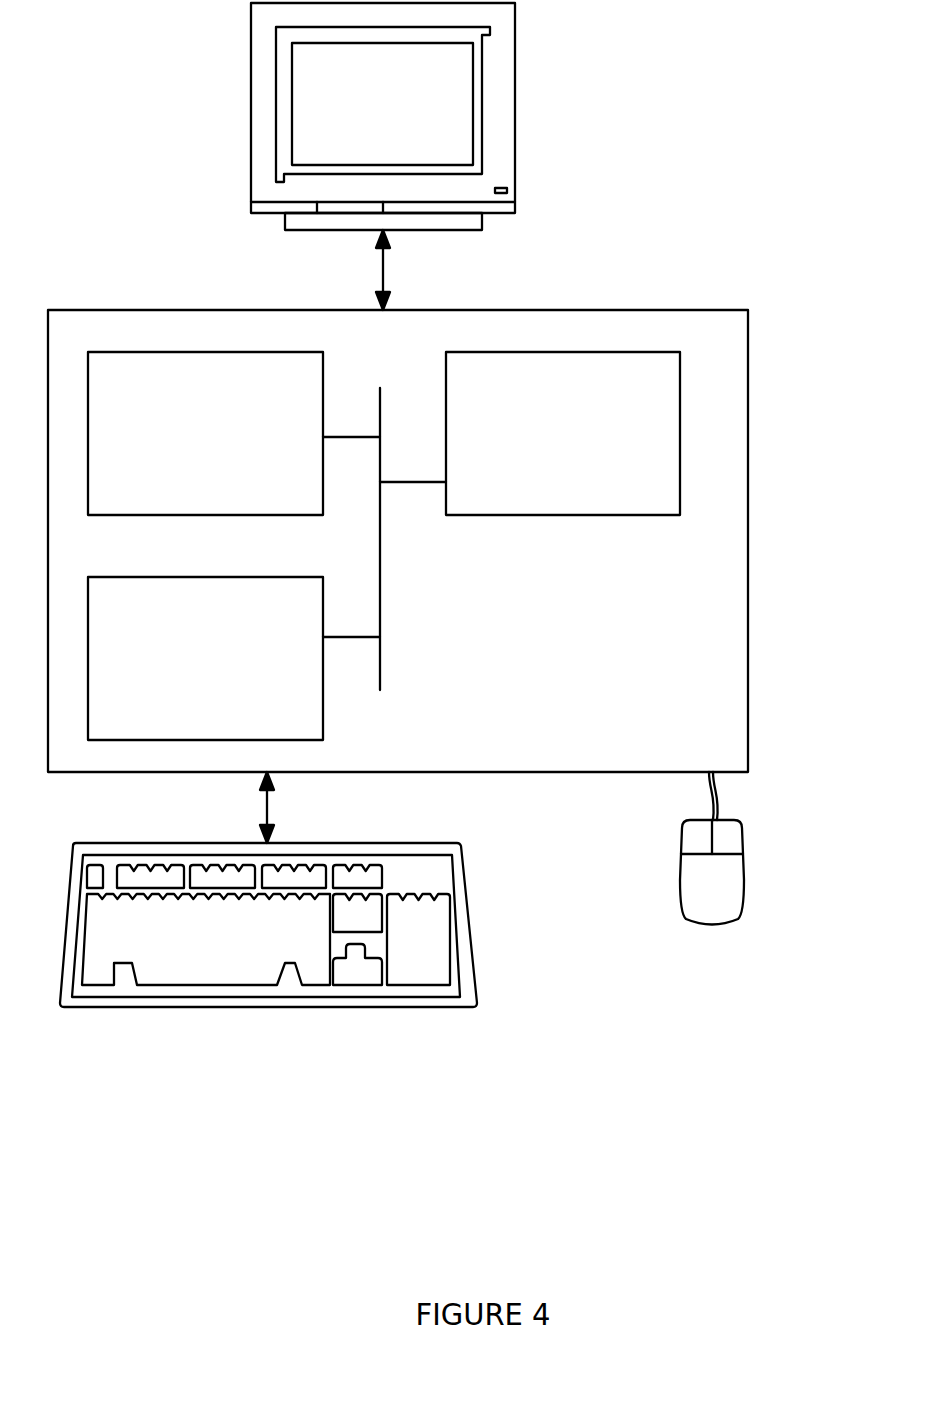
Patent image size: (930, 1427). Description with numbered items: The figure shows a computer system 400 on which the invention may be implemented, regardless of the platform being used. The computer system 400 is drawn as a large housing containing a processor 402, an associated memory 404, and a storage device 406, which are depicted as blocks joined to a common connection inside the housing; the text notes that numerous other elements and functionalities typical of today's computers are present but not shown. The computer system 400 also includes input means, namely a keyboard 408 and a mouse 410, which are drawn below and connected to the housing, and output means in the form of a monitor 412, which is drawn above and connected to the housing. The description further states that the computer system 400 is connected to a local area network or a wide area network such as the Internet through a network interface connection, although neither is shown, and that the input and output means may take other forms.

The computer system 400 is at (722, 180).
The processor 402 is at (561, 444).
The memory 404 is at (184, 445).
The storage device 406 is at (184, 668).
The keyboard 408 is at (177, 967).
The mouse 410 is at (690, 895).
The monitor 412 is at (362, 119).